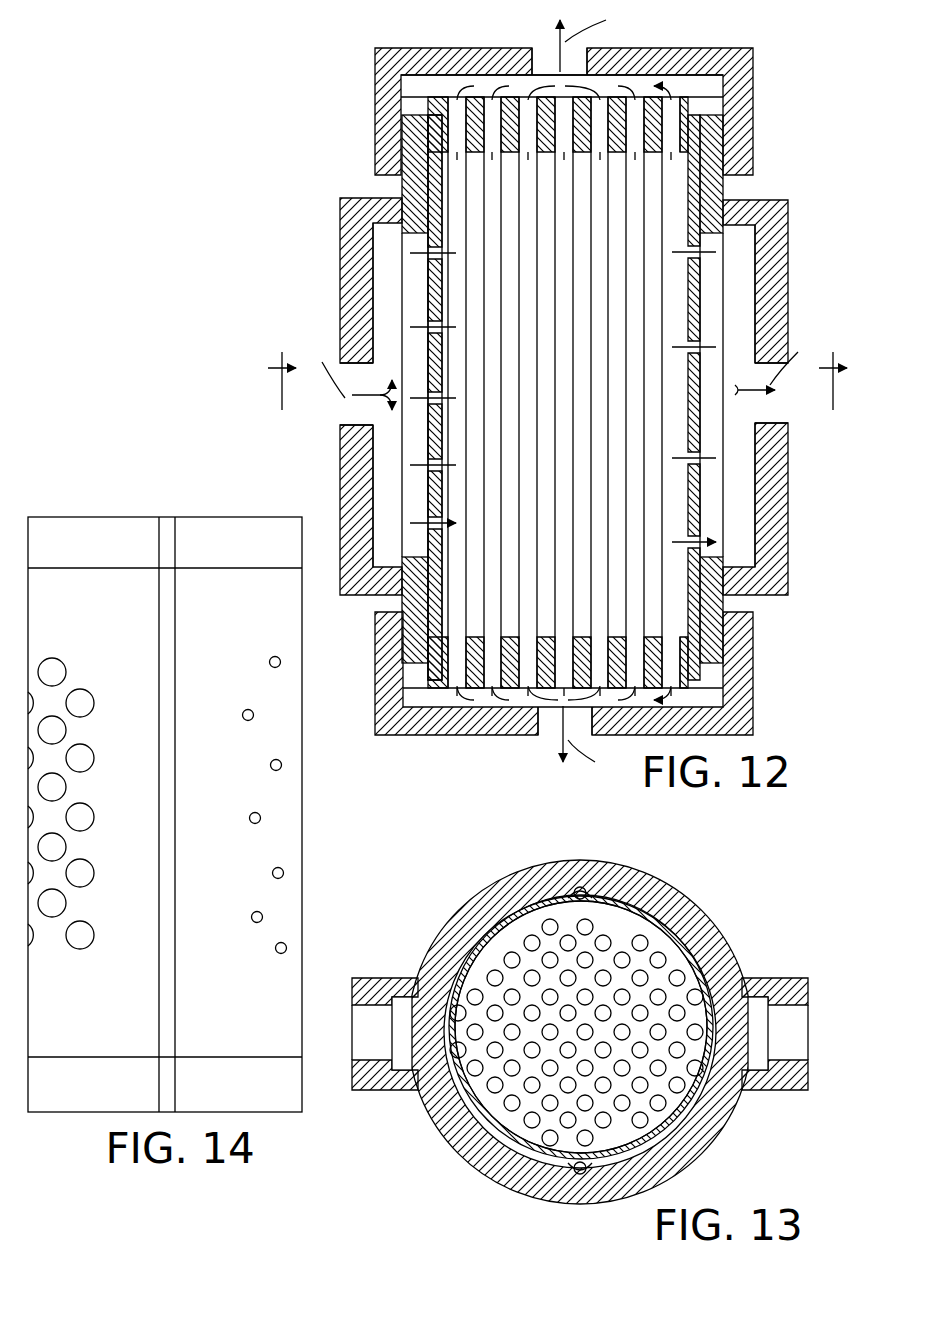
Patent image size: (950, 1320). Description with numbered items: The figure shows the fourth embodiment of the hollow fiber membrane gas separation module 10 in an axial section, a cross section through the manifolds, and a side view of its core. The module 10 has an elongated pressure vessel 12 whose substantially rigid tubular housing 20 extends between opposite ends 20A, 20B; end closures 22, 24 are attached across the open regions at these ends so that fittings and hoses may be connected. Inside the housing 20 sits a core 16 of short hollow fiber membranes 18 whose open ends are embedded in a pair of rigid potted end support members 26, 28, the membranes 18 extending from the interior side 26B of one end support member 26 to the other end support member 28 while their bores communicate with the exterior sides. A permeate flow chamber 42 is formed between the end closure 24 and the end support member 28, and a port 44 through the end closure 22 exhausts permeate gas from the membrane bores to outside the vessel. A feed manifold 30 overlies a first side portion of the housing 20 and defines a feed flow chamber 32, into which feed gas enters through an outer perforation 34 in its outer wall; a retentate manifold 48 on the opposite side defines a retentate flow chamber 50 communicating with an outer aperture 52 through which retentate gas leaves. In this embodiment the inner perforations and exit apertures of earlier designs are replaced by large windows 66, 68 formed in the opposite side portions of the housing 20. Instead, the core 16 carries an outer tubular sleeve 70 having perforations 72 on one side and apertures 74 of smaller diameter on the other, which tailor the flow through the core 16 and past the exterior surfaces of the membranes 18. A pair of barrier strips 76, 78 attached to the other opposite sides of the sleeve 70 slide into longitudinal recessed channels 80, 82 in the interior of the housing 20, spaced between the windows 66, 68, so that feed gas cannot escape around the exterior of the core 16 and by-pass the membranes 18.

In FIG. 12, the gas separation module 10 is at (325, 47).
In FIG. 13, the gas separation module 10 is at (752, 872).
In FIG. 12, the pressure vessel 12 is at (730, 190).
In FIG. 13, the pressure vessel 12 is at (467, 1165).
In FIG. 12, the core 16 is at (703, 90).
In FIG. 14, the core 16 is at (177, 498).
In FIG. 13, the core 16 is at (492, 935).
In FIG. 12, the hollow fiber membranes 18 is at (614, 617).
In FIG. 13, the hollow fiber membranes 18 is at (576, 1032).
In FIG. 12, the tubular housing 20 is at (397, 602).
In FIG. 13, the tubular housing 20 is at (665, 882).
In FIG. 12, the first end of housing 20A is at (732, 128).
In FIG. 12, the second end of housing 20B is at (412, 633).
In FIG. 12, the end closure 22 is at (682, 52).
In FIG. 12, the end closure 24 is at (478, 740).
In FIG. 12, the end support member 26 is at (408, 112).
In FIG. 14, the end support member 26 is at (82, 522).
In FIG. 12, the interior side of end support member 26B is at (690, 162).
In FIG. 12, the end support member 28 is at (412, 680).
In FIG. 14, the end support member 28 is at (73, 1098).
In FIG. 12, the feed manifold 30 is at (330, 208).
In FIG. 13, the feed manifold 30 is at (372, 1093).
In FIG. 12, the feed flow chamber 32 is at (387, 489).
In FIG. 13, the feed flow chamber 32 is at (398, 1040).
In FIG. 12, the outer perforation 34 is at (345, 405).
In FIG. 13, the outer perforation 34 is at (348, 1012).
In FIG. 12, the permeate flow chamber 42 is at (405, 740).
In FIG. 12, the port 44 is at (536, 78).
In FIG. 12, the retentate manifold 48 is at (790, 207).
In FIG. 13, the retentate manifold 48 is at (800, 975).
In FIG. 12, the retentate flow chamber 50 is at (740, 444).
In FIG. 13, the retentate flow chamber 50 is at (756, 1040).
In FIG. 12, the outer aperture 52 is at (782, 405).
In FIG. 13, the outer aperture 52 is at (812, 1040).
In FIG. 12, the large window 66 is at (398, 228).
In FIG. 13, the large window 66 is at (435, 1000).
In FIG. 12, the large window 68 is at (728, 240).
In FIG. 13, the large window 68 is at (748, 998).
In FIG. 12, the outer tubular sleeve 70 is at (702, 606).
In FIG. 14, the outer tubular sleeve 70 is at (290, 962).
In FIG. 13, the outer tubular sleeve 70 is at (503, 915).
In FIG. 12, the perforations 72 is at (432, 318).
In FIG. 14, the perforations 72 is at (78, 692).
In FIG. 13, the perforations 72 is at (450, 1000).
In FIG. 12, the apertures 74 is at (692, 328).
In FIG. 14, the apertures 74 is at (246, 722).
In FIG. 13, the apertures 74 is at (714, 1008).
In FIG. 13, the barrier strip 76 is at (588, 888).
In FIG. 14, the barrier strip 78 is at (160, 940).
In FIG. 13, the barrier strip 78 is at (593, 1182).
In FIG. 13, the longitudinal recessed channel 80 is at (573, 888).
In FIG. 13, the longitudinal recessed channel 82 is at (572, 1178).